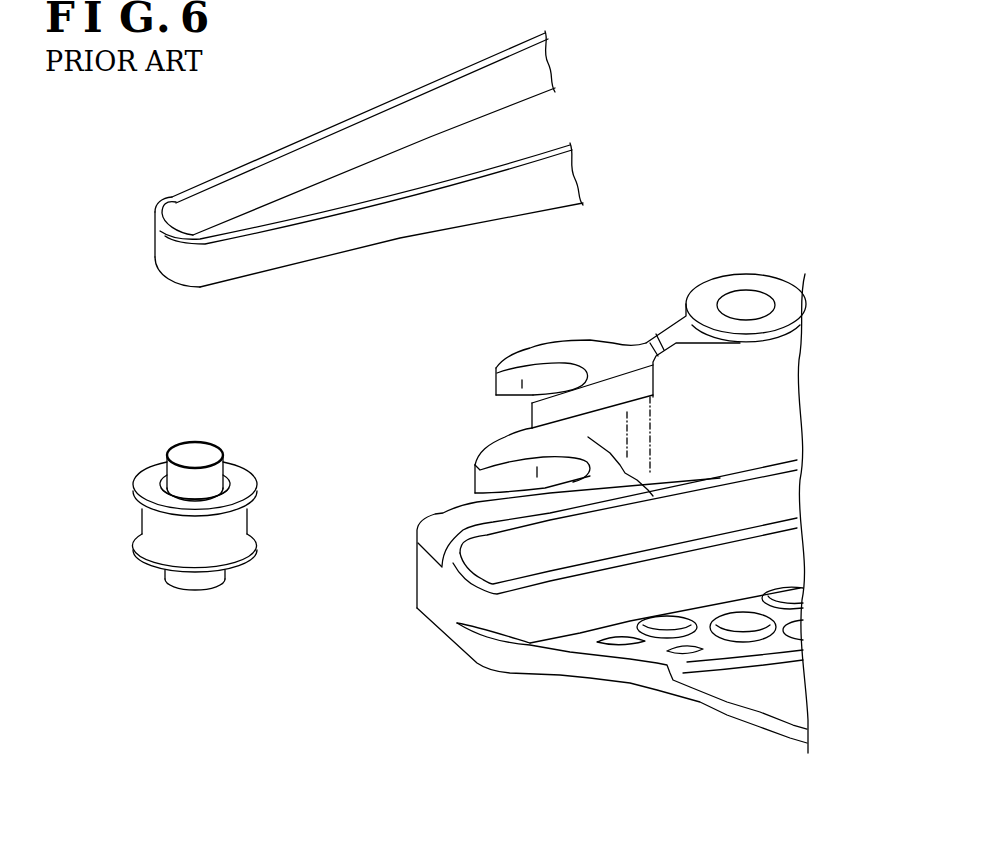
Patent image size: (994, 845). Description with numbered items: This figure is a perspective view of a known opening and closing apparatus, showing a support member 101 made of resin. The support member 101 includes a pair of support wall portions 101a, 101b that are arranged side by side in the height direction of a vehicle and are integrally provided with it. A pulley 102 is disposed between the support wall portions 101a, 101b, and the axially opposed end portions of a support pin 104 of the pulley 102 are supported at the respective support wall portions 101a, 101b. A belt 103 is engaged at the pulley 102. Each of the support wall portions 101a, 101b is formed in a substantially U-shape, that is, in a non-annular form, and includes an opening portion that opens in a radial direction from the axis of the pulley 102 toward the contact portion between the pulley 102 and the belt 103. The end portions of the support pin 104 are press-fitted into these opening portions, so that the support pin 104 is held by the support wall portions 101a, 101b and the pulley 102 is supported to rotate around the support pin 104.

The support member 101 is at (632, 685).
The support wall portion 101a is at (520, 360).
The support wall portion 101b is at (487, 460).
The pulley 102 is at (143, 520).
The belt 103 is at (160, 244).
The support pin 104 is at (212, 475).